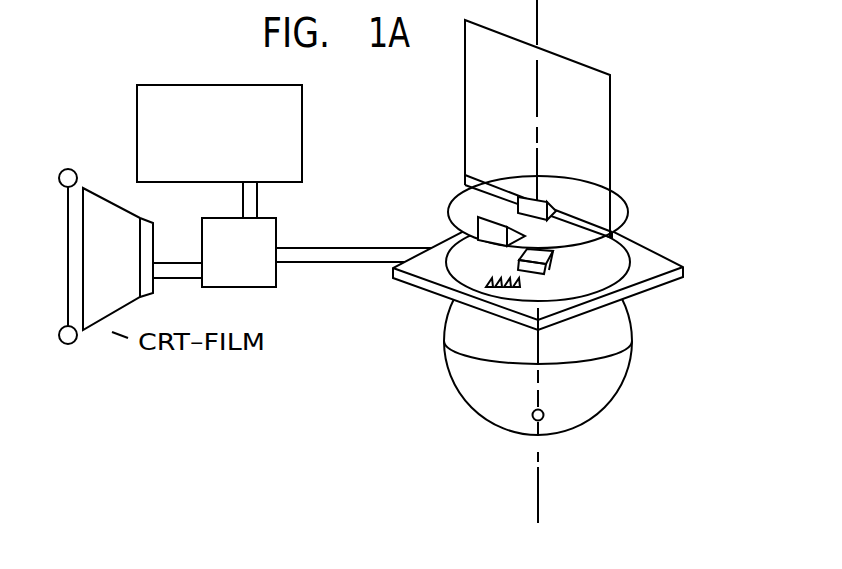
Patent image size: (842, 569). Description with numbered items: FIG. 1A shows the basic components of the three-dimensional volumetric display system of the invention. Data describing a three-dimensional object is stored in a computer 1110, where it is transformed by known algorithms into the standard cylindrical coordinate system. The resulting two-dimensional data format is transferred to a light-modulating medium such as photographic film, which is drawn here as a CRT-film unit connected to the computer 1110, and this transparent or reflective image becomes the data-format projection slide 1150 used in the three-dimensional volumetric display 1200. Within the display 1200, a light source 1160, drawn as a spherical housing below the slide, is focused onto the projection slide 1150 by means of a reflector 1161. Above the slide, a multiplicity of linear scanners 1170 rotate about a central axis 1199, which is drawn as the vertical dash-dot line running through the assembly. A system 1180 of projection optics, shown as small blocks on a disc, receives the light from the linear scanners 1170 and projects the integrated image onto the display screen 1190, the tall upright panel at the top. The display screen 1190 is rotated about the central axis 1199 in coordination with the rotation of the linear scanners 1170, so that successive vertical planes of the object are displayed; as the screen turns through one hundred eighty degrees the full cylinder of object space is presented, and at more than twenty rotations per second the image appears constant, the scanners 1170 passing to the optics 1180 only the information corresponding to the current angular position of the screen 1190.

The computer 1110 is at (284, 186).
The data-format projection slide 1150 is at (633, 302).
The light source 1160 is at (607, 412).
The reflector 1161 is at (632, 373).
The linear scanners 1170 is at (477, 280).
The projection optics 1180 is at (470, 209).
The display screen 1190 is at (622, 159).
The central axis 1199 is at (545, 33).
The three-dimensional volumetric display 1200 is at (635, 212).